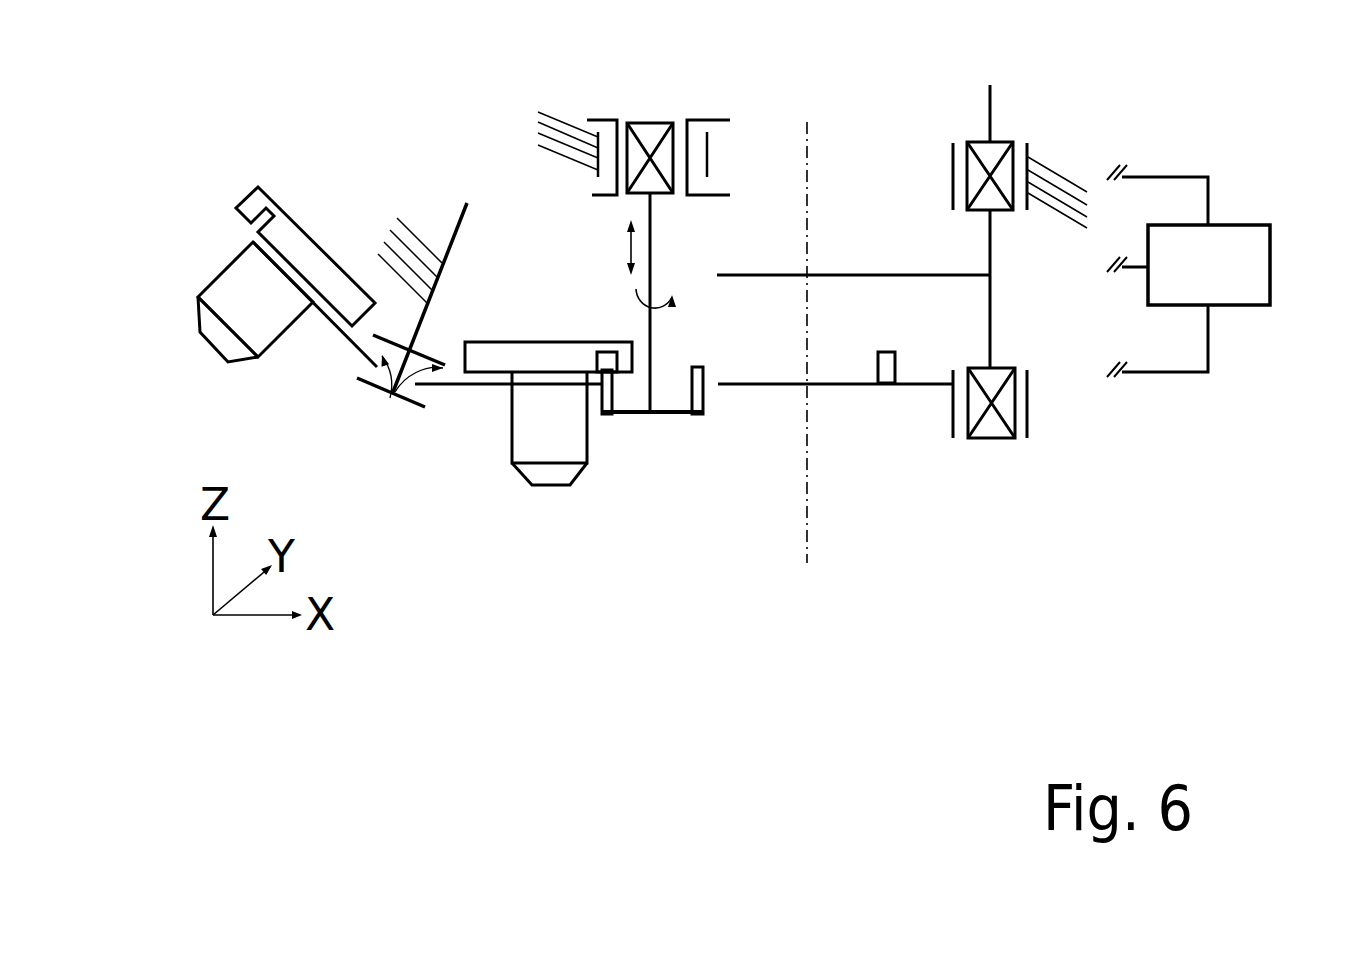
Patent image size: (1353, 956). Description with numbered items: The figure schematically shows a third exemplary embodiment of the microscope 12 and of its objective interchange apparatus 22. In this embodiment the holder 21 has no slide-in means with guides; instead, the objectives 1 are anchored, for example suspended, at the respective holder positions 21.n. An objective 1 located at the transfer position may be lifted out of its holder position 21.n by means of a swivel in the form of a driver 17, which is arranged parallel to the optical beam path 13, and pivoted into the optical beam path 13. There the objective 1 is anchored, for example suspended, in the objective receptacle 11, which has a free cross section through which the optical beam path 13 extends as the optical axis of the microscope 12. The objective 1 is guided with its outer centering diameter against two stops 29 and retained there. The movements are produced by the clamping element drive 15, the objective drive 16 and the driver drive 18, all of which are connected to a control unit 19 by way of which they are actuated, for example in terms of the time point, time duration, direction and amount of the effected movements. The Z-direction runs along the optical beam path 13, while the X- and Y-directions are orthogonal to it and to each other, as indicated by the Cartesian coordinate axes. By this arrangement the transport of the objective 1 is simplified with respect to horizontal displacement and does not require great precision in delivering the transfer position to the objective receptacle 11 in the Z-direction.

The objective 1 is at (253, 300).
The holder 21 is at (443, 210).
The holder position 21.n is at (393, 392).
The objective interchange apparatus 22 is at (595, 508).
The driver 17 is at (635, 414).
The driver drive 18 is at (653, 135).
The objective drive 16 is at (992, 157).
The clamping element drive 15 is at (993, 428).
The stop 29 is at (890, 370).
The objective receptacle 11 is at (825, 390).
The optical beam path 13 is at (807, 543).
The microscope 12 is at (1189, 229).
The control unit 19 is at (1235, 285).